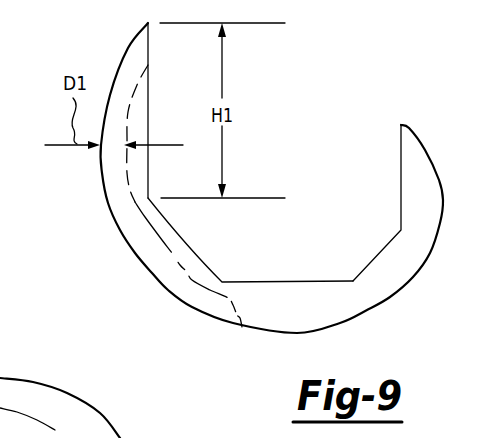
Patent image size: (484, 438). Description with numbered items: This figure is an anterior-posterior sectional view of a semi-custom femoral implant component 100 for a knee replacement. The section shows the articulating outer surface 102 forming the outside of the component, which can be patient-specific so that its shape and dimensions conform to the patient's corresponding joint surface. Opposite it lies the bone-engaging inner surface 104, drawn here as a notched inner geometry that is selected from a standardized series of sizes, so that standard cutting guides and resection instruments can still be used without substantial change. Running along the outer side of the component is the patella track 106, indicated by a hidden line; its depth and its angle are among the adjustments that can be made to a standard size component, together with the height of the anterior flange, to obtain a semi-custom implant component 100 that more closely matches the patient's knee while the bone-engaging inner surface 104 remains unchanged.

The semi-custom implant component 100 is at (229, 175).
The articulating outer surface 102 is at (163, 284).
The bone-engaging inner surface 104 is at (199, 259).
The patella track 106 is at (123, 207).